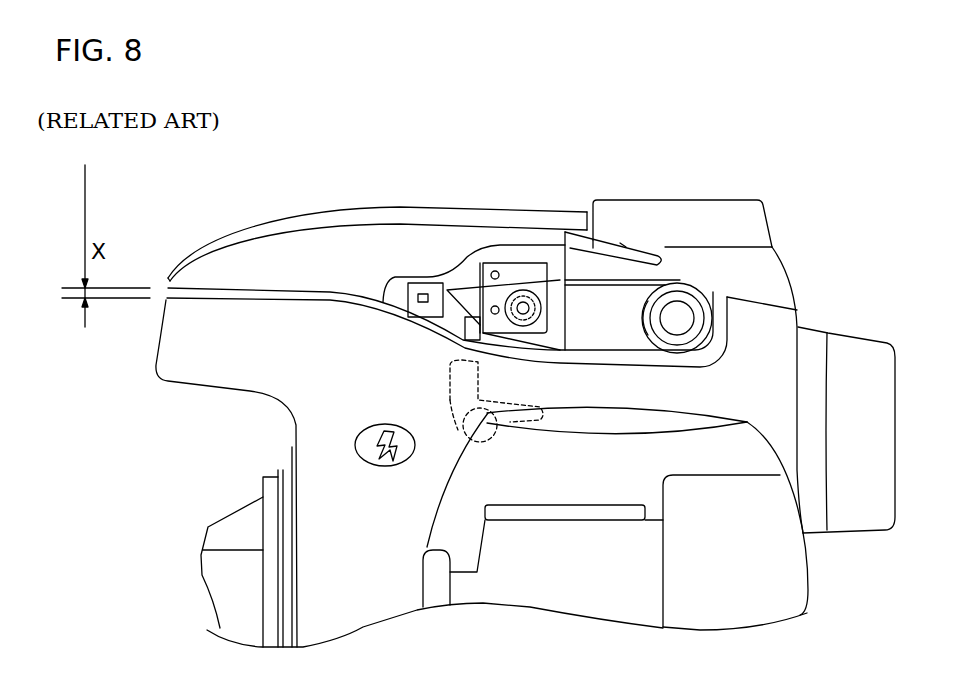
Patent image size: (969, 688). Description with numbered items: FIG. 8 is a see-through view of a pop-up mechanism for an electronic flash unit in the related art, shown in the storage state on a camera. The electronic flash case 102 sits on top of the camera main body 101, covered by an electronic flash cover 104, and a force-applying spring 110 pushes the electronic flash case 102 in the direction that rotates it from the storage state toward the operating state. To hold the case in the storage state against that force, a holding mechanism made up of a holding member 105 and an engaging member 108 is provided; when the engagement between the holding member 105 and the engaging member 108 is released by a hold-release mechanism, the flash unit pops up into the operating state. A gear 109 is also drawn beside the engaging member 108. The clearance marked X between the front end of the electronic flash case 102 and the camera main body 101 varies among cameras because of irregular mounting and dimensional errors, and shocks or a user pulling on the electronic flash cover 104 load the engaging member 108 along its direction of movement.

The camera main body 101 is at (775, 278).
The electronic flash case 102 is at (623, 317).
The electronic flash cover 104 is at (263, 252).
The holding member 105 is at (472, 337).
The engaging member 108 is at (520, 267).
The gear 109 is at (532, 287).
The force-applying spring 110 is at (595, 283).